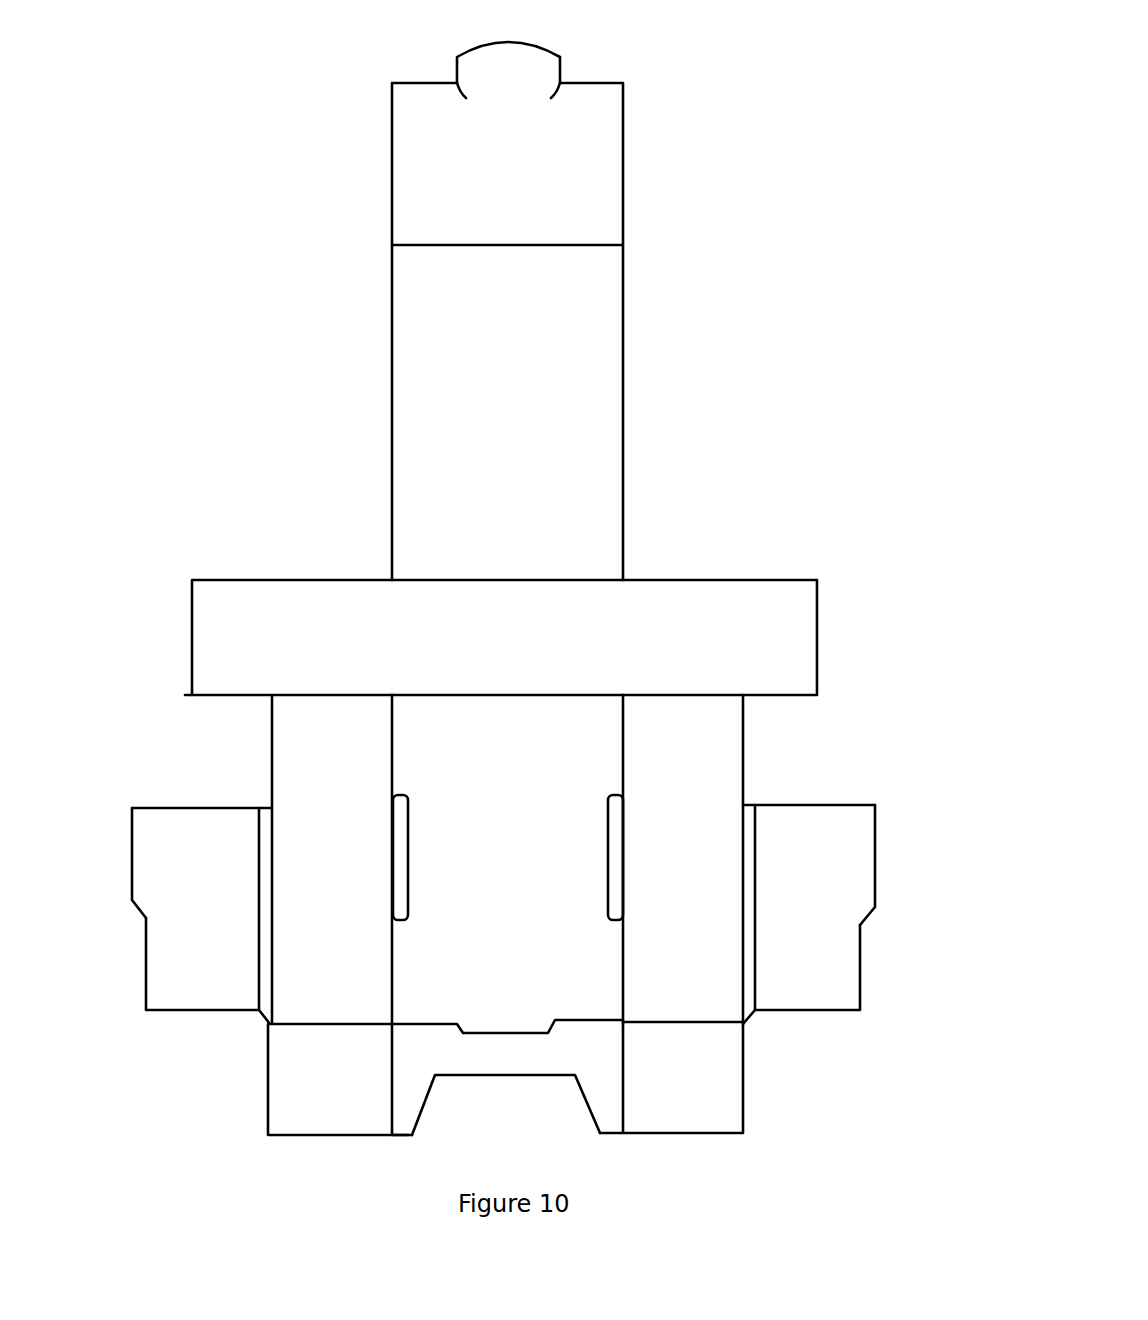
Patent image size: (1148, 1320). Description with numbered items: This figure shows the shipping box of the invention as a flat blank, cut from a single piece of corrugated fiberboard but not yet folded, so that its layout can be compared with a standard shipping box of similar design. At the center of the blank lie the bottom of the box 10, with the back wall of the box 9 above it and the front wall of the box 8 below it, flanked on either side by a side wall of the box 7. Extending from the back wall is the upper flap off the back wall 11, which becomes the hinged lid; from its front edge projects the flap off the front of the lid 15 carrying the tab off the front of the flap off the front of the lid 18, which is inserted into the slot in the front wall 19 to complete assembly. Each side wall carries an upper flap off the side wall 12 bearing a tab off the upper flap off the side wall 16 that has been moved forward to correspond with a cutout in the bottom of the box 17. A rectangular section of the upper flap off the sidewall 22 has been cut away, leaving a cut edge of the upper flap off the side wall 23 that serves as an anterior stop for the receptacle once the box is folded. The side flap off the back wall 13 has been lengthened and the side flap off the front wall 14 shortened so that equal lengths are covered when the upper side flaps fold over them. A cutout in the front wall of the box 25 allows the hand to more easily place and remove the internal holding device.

The side wall of the box 7 is at (318, 962).
The front wall of the box 8 is at (410, 1078).
The back wall of the box 9 is at (548, 628).
The bottom of the box 10 is at (548, 762).
The upper flap off the back wall 11 is at (548, 403).
The upper flap off the side wall 12 is at (195, 942).
The side flap off the back wall 13 is at (285, 610).
The side flap off the front wall 14 is at (298, 1068).
The flap off the front of the lid 15 is at (578, 172).
The tab off the upper flap off the side wall 16 is at (138, 863).
The cutout in the bottom of the box 17 is at (390, 850).
The tab off the front of the flap off the front of the lid 18 is at (530, 73).
The slot in the front wall 19 is at (495, 1023).
The section of the upper flap off the sidewall that has been cut away 22 is at (220, 752).
The cut edge of the upper flap off the side wall 23 is at (203, 805).
The cutout in the front wall of the box 25 is at (553, 1110).